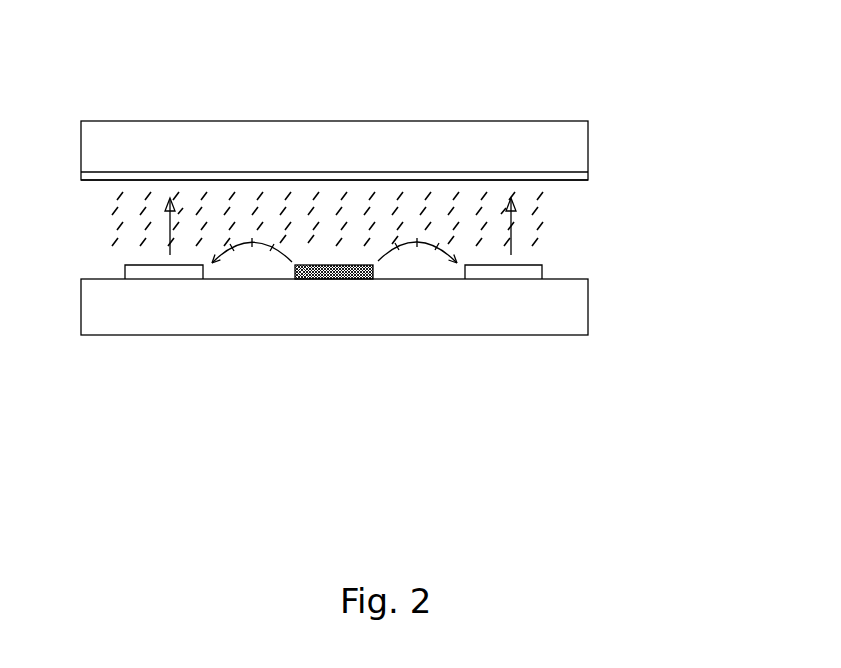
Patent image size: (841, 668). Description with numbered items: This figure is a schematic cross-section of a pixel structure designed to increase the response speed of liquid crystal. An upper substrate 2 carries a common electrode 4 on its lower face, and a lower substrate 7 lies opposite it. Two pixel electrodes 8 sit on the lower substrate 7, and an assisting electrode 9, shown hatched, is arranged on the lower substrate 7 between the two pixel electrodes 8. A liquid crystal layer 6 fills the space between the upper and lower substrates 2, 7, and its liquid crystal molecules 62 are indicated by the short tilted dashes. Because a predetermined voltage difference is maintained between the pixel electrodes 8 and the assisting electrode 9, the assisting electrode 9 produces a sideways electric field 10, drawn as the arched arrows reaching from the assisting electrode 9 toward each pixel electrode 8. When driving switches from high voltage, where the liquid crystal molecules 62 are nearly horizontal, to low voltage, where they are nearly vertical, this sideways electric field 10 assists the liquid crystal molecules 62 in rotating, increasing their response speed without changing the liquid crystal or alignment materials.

The upper substrate 2 is at (363, 150).
The common electrode 4 is at (580, 178).
The liquid crystal layer 6 is at (352, 221).
The liquid crystal molecules 62 is at (113, 213).
The lower substrate 7 is at (517, 312).
The pixel electrodes 8 is at (518, 273).
The assisting electrodes 9 is at (340, 278).
The sideways electric field 10 is at (237, 252).